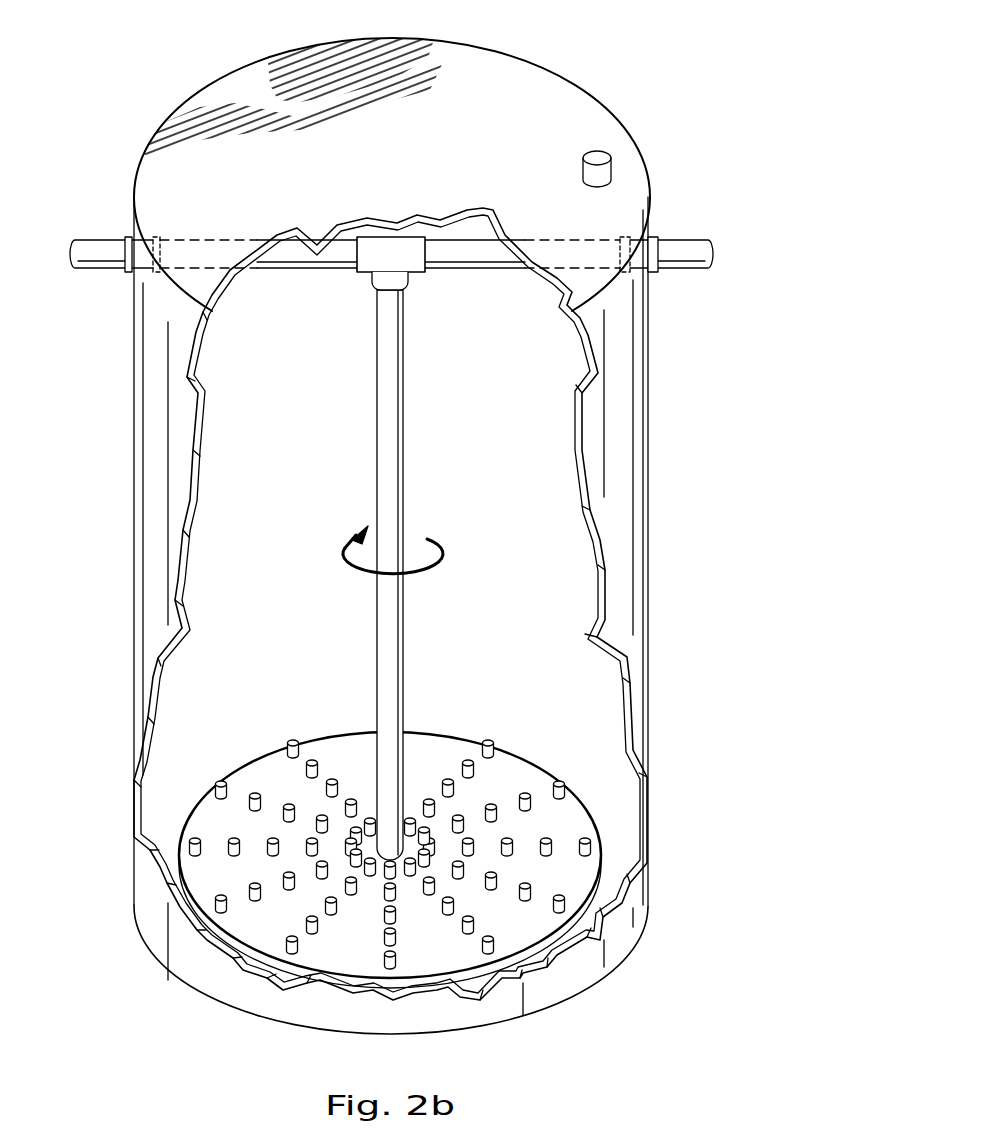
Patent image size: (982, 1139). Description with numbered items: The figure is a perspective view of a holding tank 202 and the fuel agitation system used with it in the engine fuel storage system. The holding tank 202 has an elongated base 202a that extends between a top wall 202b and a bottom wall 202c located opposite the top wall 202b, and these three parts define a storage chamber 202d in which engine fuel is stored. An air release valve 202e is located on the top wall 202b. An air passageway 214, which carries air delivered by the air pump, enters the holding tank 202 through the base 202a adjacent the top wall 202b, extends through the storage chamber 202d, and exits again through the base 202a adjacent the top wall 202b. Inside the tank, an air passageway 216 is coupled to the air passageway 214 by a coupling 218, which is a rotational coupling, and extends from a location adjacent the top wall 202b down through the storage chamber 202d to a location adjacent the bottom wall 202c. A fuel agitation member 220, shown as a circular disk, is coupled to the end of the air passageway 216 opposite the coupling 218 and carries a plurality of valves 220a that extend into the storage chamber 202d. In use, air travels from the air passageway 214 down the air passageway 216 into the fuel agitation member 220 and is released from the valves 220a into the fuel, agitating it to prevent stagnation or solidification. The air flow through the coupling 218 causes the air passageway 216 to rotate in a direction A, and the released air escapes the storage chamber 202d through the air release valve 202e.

The holding tank 202 is at (439, 527).
The elongated base 202a is at (650, 487).
The top wall 202b is at (248, 75).
The bottom wall 202c is at (573, 997).
The storage chamber 202d is at (242, 449).
The air release valve 202e is at (583, 170).
The air passageway 214 is at (95, 240).
The air passageway 216 is at (408, 432).
The coupling 218 is at (410, 284).
The fuel agitation member 220 is at (395, 874).
The valves 220a is at (290, 742).
The direction A is at (343, 552).